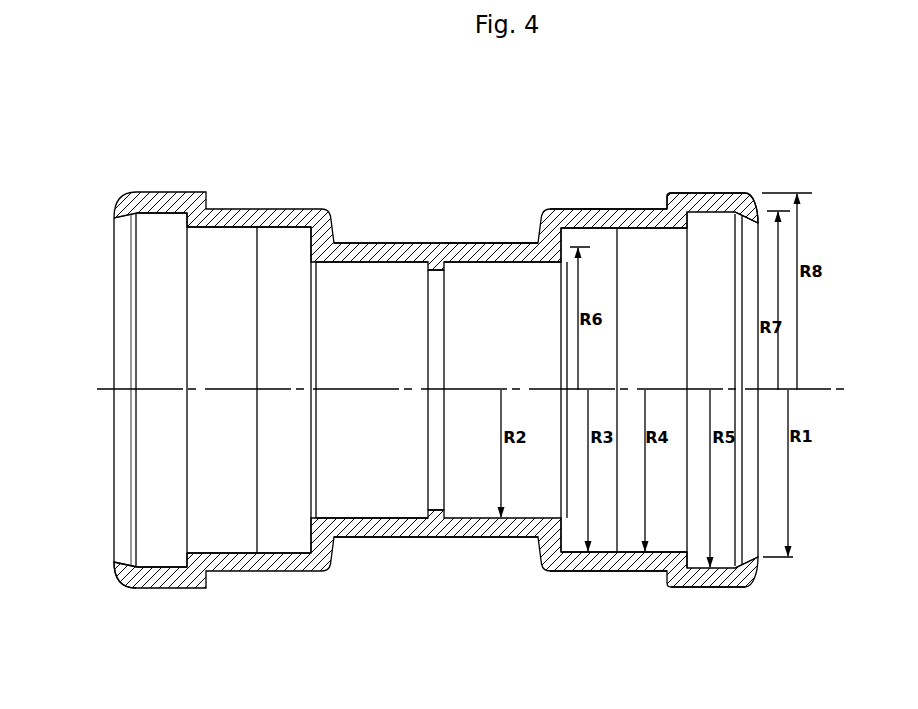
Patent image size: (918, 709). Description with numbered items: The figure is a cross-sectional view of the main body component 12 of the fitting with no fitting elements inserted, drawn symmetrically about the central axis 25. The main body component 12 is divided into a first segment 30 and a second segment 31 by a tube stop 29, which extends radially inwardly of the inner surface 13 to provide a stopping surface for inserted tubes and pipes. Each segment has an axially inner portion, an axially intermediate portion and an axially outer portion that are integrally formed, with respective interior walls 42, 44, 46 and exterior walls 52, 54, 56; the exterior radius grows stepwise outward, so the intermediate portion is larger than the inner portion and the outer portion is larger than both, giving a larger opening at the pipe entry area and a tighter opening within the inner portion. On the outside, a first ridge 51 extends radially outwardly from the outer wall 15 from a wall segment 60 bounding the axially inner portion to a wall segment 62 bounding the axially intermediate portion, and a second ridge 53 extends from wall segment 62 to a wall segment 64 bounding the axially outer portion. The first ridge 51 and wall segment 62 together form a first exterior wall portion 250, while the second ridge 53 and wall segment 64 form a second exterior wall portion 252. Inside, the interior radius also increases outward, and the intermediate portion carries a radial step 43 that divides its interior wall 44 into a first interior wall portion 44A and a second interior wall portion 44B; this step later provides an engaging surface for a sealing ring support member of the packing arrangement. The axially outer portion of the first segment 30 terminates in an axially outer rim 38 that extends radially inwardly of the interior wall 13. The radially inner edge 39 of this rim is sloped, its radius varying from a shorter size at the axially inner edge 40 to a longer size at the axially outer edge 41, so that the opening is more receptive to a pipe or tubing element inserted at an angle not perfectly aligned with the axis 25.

The main body component 12 is at (487, 538).
The inner surface 13 is at (375, 262).
The outer wall 15 is at (393, 240).
The axis 25 is at (95, 389).
The tube stop 29 is at (437, 520).
The first segment 30 is at (272, 148).
The second segment 31 is at (666, 117).
The axially outer rim 38 is at (113, 572).
The radially inner edge 39 is at (128, 555).
The axially inner edge 40 is at (140, 222).
The axially outer edge 41 is at (112, 222).
The interior wall 42 is at (487, 262).
The radial step 43 is at (616, 232).
The interior wall 44 is at (663, 305).
The first interior wall portion 44A is at (274, 551).
The second interior wall portion 44B is at (236, 553).
The interior wall 46 is at (150, 566).
The first ridge 51 is at (331, 222).
The exterior wall 52 is at (513, 242).
The second ridge 53 is at (663, 198).
The exterior wall 54 is at (578, 205).
The exterior wall 56 is at (692, 188).
The wall segment 60 is at (483, 238).
The wall segment 62 is at (610, 208).
The wall segment 64 is at (710, 188).
The first exterior wall portion 250 is at (608, 588).
The second exterior wall portion 252 is at (703, 608).